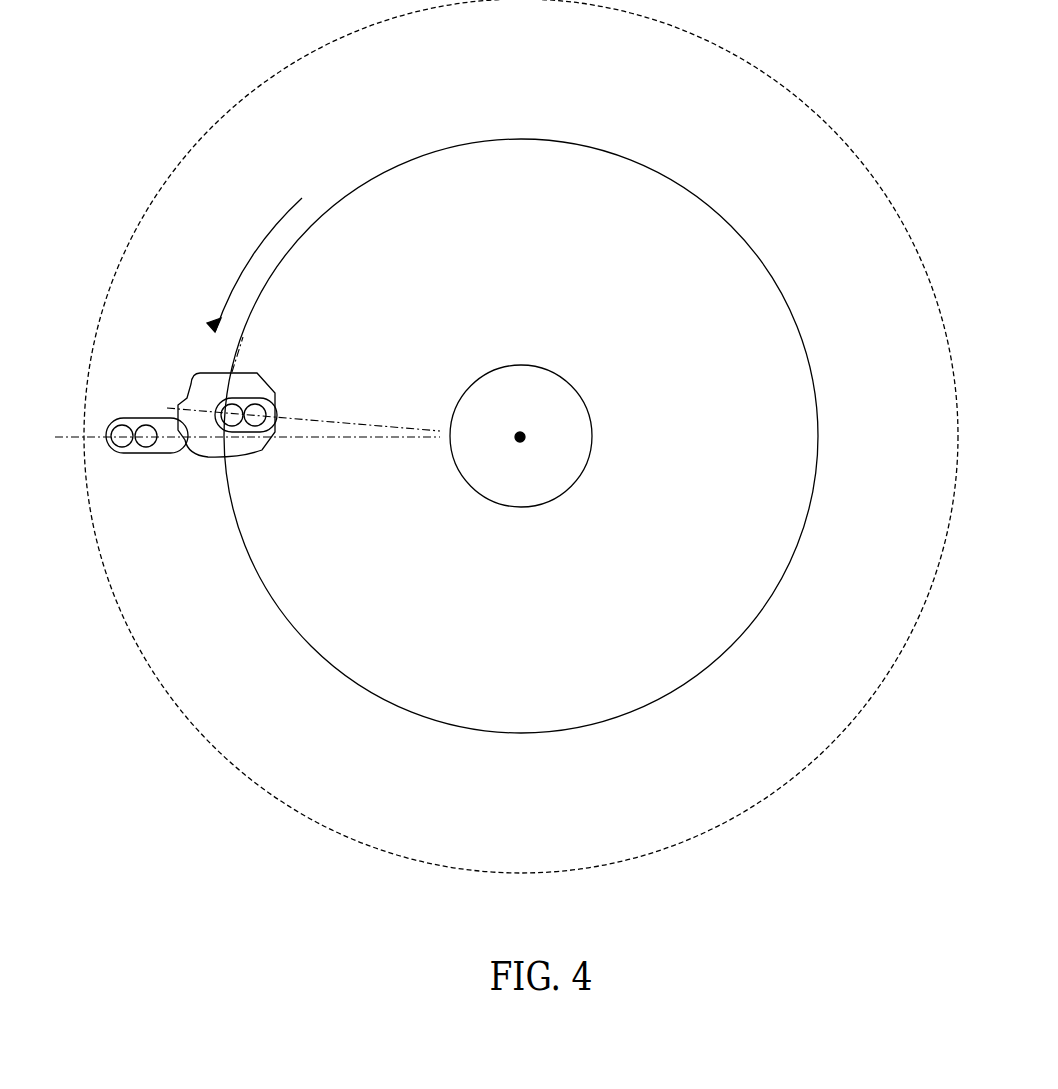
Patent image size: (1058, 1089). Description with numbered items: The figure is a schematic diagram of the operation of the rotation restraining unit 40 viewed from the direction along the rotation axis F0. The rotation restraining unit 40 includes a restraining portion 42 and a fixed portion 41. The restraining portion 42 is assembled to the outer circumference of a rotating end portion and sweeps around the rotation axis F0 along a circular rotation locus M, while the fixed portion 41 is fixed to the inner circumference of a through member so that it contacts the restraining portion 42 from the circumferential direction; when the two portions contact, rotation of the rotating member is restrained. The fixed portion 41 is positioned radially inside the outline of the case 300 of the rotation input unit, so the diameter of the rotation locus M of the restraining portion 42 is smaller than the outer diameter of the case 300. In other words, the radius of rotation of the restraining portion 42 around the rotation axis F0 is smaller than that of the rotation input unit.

The case 300 is at (837, 741).
The rotation locus M is at (412, 713).
The rotation axis F0 is at (522, 433).
The rotation restraining unit 40 is at (159, 591).
The fixed portion 41 is at (130, 456).
The restraining portion 42 is at (263, 480).